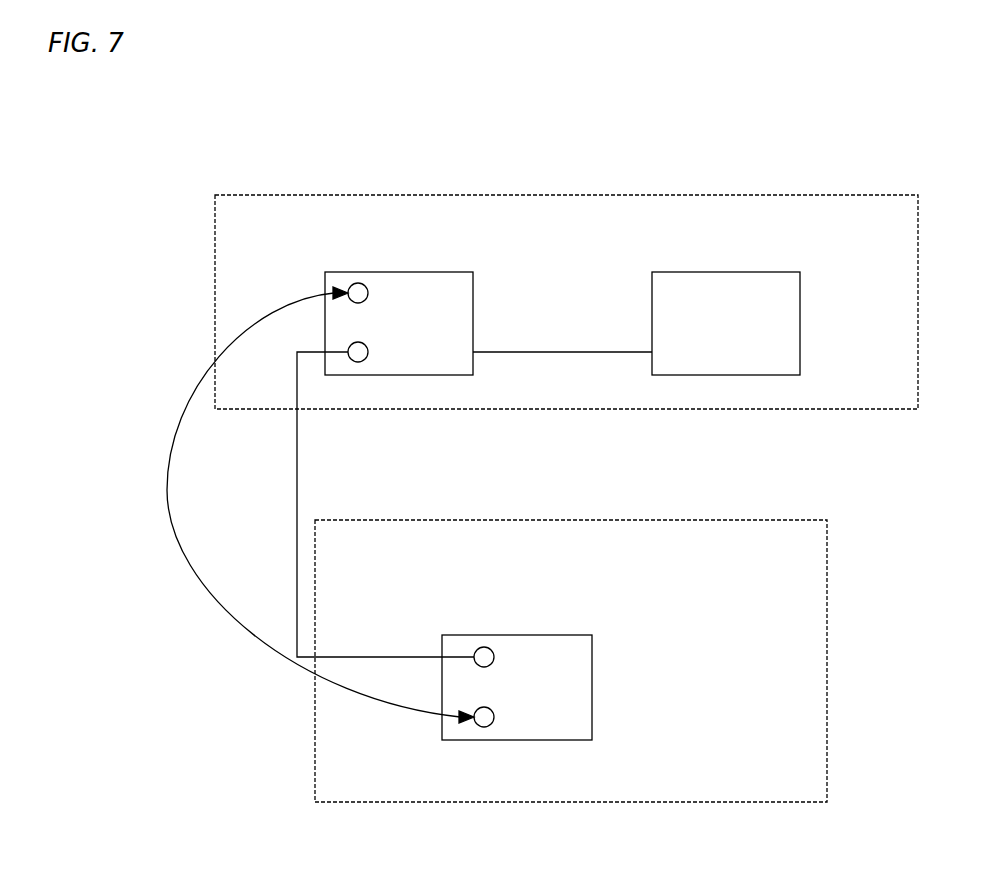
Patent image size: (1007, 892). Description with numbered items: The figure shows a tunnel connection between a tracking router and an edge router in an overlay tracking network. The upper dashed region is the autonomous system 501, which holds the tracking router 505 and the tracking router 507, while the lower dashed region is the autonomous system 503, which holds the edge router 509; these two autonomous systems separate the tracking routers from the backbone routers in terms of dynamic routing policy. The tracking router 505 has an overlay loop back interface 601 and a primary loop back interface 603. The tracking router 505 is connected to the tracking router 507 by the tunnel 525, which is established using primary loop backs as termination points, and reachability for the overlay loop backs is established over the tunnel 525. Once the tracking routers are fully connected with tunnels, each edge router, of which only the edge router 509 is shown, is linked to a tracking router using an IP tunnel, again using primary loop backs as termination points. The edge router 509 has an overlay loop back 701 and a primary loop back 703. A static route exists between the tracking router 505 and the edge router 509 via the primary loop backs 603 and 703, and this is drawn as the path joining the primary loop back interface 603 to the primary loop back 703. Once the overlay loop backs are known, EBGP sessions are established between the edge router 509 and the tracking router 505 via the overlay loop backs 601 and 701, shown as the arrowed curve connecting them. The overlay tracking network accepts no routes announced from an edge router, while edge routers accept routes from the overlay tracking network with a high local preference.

The autonomous system 501 is at (918, 305).
The autonomous system 503 is at (827, 660).
The tracking router 505 is at (350, 271).
The tracking router 507 is at (800, 325).
The edge router 509 is at (592, 688).
The tunnel 525 is at (558, 352).
The overlay loop back interface 601 is at (366, 283).
The primary loop back interface 603 is at (369, 344).
The overlay loop back 701 is at (478, 726).
The primary loop back 703 is at (484, 646).